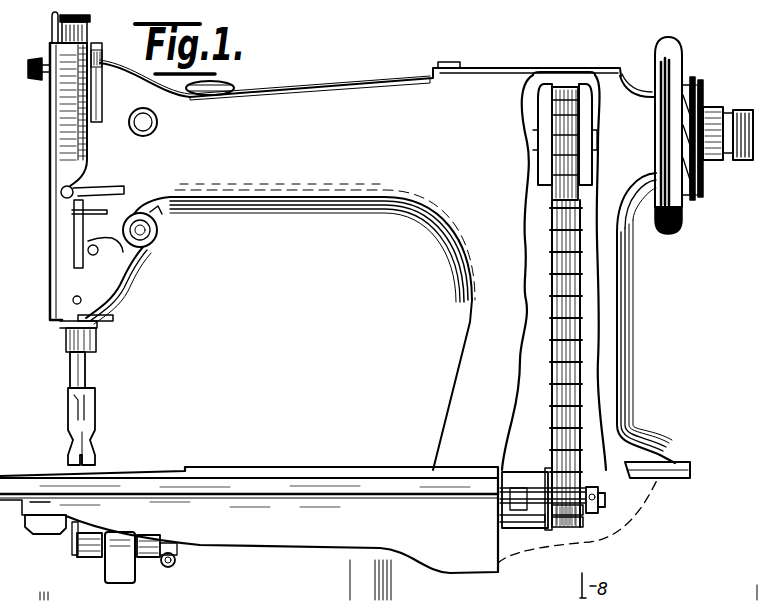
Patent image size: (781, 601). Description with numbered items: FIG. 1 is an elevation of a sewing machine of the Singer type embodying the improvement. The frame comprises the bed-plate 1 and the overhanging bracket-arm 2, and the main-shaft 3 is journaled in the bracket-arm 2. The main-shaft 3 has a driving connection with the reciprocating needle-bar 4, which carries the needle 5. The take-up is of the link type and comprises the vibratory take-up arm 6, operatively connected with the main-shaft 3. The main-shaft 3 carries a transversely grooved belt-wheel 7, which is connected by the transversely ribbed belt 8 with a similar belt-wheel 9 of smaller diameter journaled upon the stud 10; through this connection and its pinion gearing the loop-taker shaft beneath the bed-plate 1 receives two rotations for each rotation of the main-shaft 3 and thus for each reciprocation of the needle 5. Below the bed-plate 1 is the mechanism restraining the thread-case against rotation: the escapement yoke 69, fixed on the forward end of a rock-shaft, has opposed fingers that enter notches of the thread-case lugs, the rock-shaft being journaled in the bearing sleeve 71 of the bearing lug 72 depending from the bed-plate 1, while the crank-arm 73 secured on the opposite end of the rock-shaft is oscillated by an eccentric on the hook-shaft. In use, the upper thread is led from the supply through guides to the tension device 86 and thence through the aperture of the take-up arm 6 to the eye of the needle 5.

The bed-plate 1 is at (323, 468).
The overhanging bracket-arm 2 is at (419, 257).
The main-shaft 3 is at (530, 160).
The reciprocating needle-bar 4 is at (87, 385).
The needle 5 is at (96, 436).
The vibratory take-up arm 6 is at (98, 45).
The belt-wheel 7 is at (548, 88).
The belt 8 is at (553, 369).
The belt-wheel 9 is at (584, 478).
The stud 10 is at (606, 503).
The escapement yoke 69 is at (73, 530).
The bearing sleeve 71 is at (92, 559).
The bearing lug 72 is at (120, 557).
The crank-arm 73 is at (176, 556).
The tension device 86 is at (158, 236).